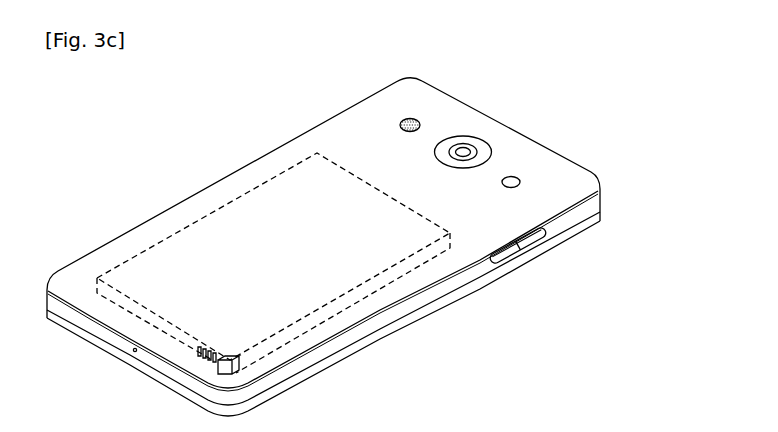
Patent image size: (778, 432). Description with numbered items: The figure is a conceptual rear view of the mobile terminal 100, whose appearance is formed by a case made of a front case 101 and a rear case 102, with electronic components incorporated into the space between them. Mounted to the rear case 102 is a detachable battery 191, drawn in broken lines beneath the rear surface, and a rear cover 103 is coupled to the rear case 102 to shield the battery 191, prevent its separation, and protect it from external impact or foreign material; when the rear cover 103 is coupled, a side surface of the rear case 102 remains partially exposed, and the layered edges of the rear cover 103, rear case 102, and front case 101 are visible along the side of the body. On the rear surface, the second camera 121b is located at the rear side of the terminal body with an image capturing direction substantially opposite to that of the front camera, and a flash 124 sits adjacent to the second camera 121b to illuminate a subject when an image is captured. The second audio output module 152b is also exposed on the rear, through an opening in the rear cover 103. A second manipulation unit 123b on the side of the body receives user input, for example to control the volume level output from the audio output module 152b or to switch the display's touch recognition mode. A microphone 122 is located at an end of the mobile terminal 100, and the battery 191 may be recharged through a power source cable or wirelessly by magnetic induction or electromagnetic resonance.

The mobile terminal 100 is at (203, 164).
The front case 101 is at (598, 214).
The rear case 102 is at (597, 199).
The rear cover 103 is at (599, 180).
The second camera 121b is at (463, 152).
The microphone 122 is at (134, 351).
The second manipulation unit 123b is at (510, 253).
The flash 124 is at (515, 181).
The second audio output module 152b is at (415, 122).
The battery 191 is at (193, 230).